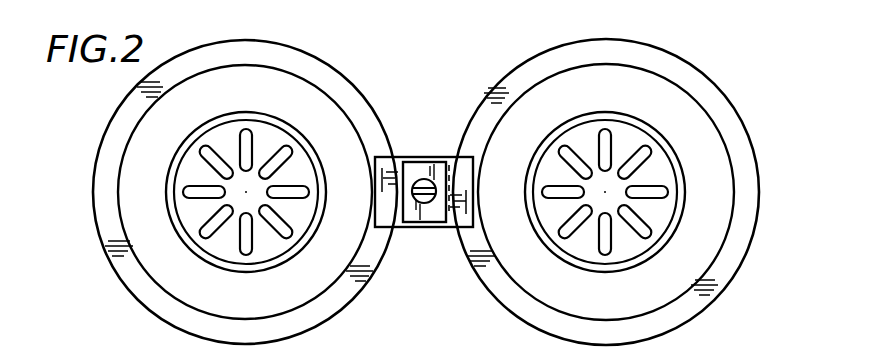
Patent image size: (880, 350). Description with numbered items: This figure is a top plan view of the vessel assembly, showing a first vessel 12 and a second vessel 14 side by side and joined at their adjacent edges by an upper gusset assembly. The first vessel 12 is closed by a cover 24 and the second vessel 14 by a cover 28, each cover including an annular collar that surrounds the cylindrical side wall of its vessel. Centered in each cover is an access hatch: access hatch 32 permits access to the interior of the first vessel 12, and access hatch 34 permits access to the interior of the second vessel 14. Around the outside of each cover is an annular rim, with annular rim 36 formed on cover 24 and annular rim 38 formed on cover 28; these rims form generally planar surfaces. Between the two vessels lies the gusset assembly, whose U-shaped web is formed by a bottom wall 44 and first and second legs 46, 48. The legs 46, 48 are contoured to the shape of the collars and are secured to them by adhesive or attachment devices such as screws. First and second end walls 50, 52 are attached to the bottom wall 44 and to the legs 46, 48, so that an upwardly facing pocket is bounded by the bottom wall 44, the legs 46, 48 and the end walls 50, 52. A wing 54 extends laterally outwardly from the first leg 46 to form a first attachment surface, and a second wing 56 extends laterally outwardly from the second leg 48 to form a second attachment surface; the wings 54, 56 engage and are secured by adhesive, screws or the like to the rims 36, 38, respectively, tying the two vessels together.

The first vessel 12 is at (116, 288).
The second vessel 14 is at (767, 190).
The cover 24 is at (322, 103).
The cover 28 is at (690, 118).
The access hatch 32 is at (193, 170).
The access hatch 34 is at (660, 173).
The annular rim 36 is at (183, 312).
The annular rim 38 is at (728, 257).
The bottom wall 44 is at (428, 213).
The first leg 46 is at (402, 228).
The second leg 48 is at (450, 162).
The first end wall 50 is at (413, 158).
The second end wall 52 is at (443, 227).
The wing 54 is at (382, 212).
The second wing 56 is at (476, 171).